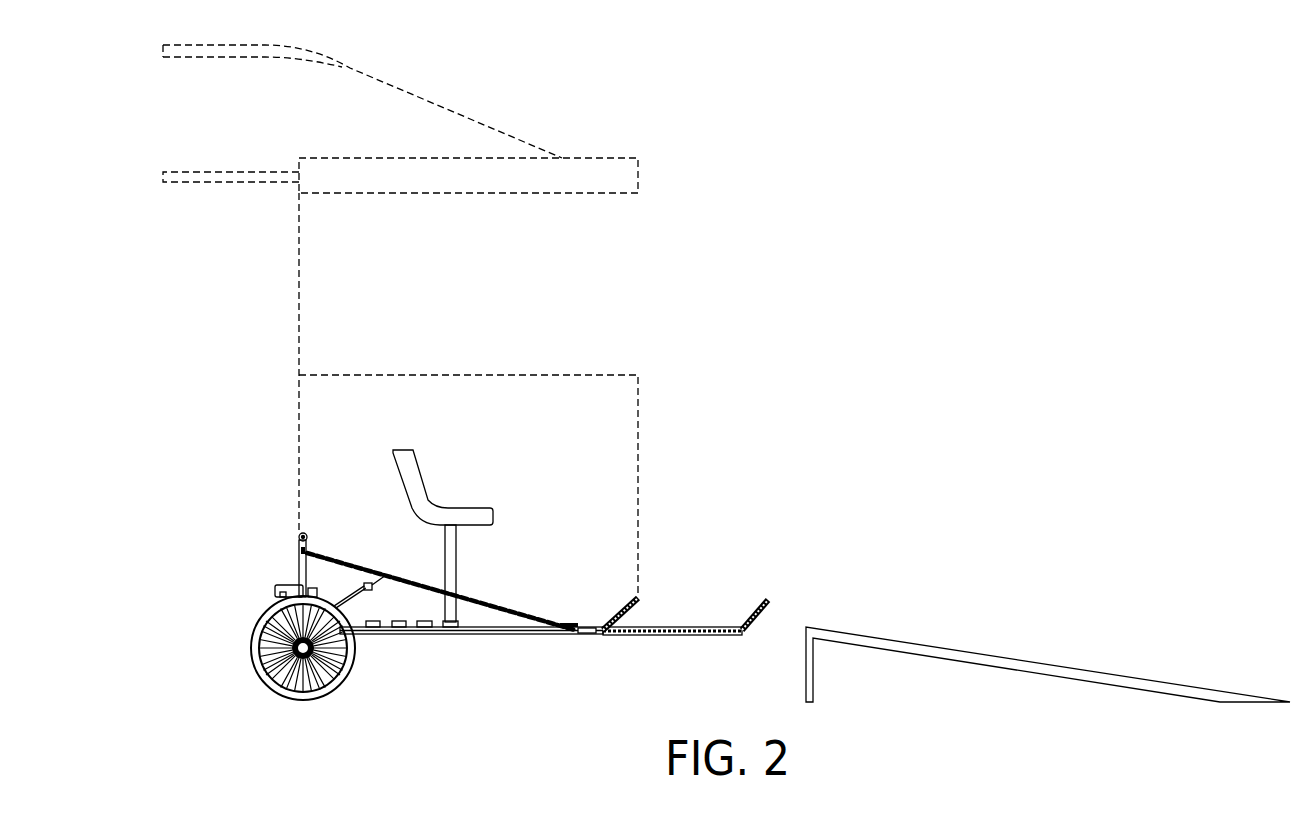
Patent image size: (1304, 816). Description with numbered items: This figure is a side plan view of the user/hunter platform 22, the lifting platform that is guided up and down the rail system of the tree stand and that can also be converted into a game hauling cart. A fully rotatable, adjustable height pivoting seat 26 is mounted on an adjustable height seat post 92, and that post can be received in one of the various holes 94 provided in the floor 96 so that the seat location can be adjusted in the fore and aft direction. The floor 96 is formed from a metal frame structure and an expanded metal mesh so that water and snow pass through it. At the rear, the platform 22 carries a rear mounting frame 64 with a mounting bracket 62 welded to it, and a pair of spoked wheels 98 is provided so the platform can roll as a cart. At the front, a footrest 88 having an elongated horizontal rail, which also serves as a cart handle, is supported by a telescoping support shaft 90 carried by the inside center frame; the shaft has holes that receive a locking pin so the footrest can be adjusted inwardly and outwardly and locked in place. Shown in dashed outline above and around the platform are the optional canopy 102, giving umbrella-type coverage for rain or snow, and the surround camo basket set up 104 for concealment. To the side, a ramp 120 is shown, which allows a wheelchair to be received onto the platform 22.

The user/hunter platform 22 is at (835, 377).
The pivoting seat 26 is at (467, 513).
The mounting bracket 62 is at (287, 583).
The rear mounting frame 64 is at (298, 563).
The footrest 88 is at (640, 593).
The telescoping support shaft 90 is at (598, 628).
The adjustable height seat post 92 is at (450, 567).
The holes 94 is at (372, 627).
The floor 96 is at (508, 625).
The spoked wheels 98 is at (268, 607).
The canopy 102 is at (640, 176).
The surround camo basket set up 104 is at (640, 490).
The ramps 120 is at (1027, 667).